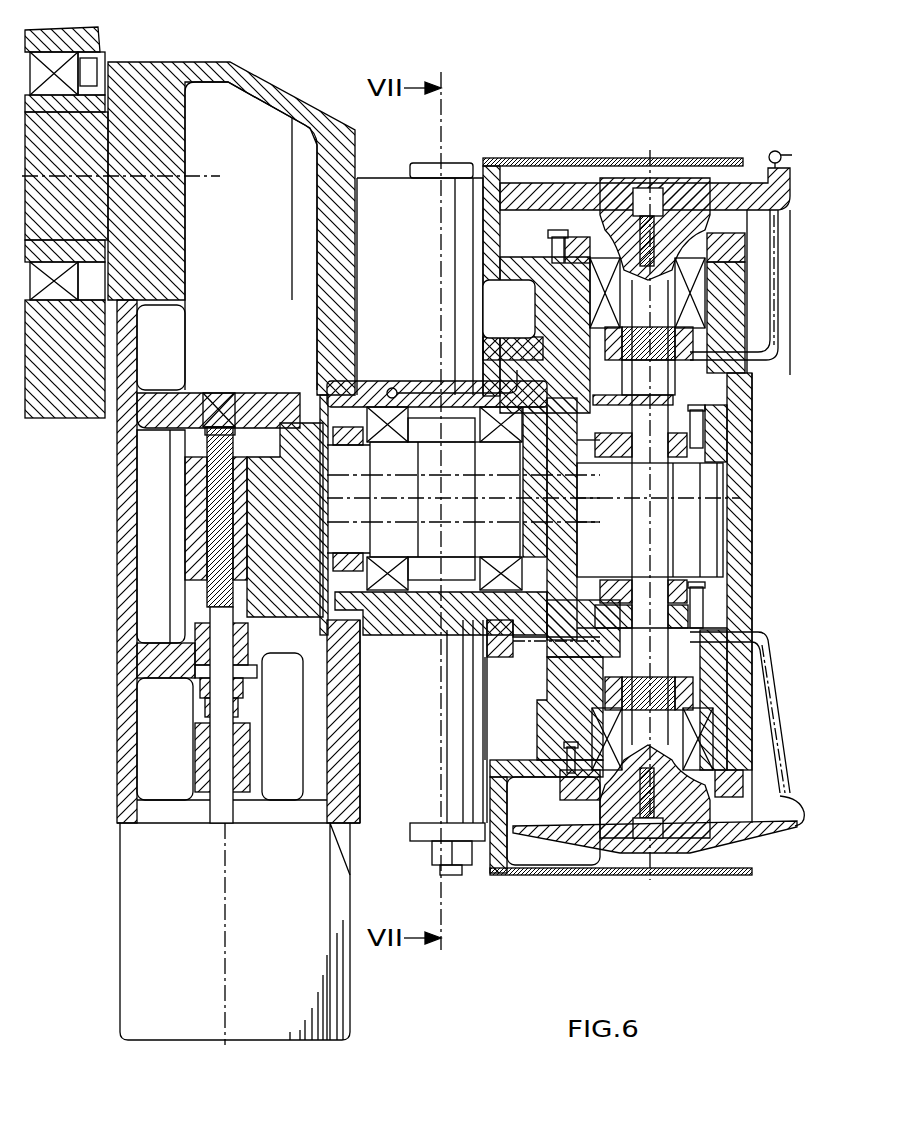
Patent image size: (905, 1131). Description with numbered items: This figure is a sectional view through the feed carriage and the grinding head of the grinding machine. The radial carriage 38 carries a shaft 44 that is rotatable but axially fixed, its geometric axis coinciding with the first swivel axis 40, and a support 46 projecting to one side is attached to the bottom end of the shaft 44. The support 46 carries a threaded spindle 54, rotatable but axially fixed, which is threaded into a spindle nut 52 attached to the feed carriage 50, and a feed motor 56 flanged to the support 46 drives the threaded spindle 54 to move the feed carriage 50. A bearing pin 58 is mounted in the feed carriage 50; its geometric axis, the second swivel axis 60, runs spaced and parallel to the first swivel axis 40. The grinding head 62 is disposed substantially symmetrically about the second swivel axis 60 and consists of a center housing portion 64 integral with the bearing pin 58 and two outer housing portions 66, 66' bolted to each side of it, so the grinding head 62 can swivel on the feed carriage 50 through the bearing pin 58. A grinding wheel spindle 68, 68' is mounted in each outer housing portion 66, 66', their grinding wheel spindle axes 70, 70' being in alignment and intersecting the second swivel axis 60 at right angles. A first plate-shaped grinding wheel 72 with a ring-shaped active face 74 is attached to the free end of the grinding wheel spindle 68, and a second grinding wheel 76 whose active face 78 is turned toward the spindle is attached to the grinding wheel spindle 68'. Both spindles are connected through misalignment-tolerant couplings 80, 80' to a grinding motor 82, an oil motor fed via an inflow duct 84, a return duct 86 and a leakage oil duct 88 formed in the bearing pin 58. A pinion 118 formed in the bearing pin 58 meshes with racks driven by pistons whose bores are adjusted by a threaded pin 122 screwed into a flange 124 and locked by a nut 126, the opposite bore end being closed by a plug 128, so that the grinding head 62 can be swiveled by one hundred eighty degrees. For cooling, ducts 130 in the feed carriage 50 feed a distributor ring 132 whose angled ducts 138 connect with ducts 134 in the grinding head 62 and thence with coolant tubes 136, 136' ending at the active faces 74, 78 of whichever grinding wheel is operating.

The radial carriage 38 is at (72, 408).
The first swivel axis 40 is at (206, 178).
The shaft 44 is at (88, 135).
The support 46 is at (272, 98).
The feed carriage 50 is at (392, 200).
The spindle nut 52 is at (205, 550).
The threaded spindle 54 is at (208, 610).
The feed motor 56 is at (280, 1040).
The bearing pin 58 is at (433, 450).
The second swivel axis 60 is at (748, 485).
The grinding head 62 is at (512, 158).
The center housing portion 64 is at (730, 530).
The outer housing portion 66 is at (536, 264).
The outer housing portion 66' is at (512, 850).
The grinding wheel spindle 68 is at (694, 366).
The grinding wheel spindle 68' is at (599, 691).
The grinding wheel spindle axis 70 is at (655, 492).
The grinding wheel spindle axis 70' is at (655, 838).
The first grinding wheel 72 is at (718, 183).
The active face 74 is at (770, 168).
The second grinding wheel 76 is at (728, 875).
The active face 78 is at (775, 826).
The coupling 80 is at (742, 426).
The coupling 80' is at (745, 605).
The grinding motor 82 is at (710, 560).
The inflow duct 84 is at (577, 525).
The return duct 86 is at (577, 497).
The leakage oil duct 88 is at (577, 472).
The pinion 118 is at (428, 555).
The threaded pin 122 is at (455, 870).
The flange 124 is at (412, 832).
The nut 126 is at (437, 855).
The plug 128 is at (455, 165).
The ducts 130 is at (437, 388).
The distributor ring 132 is at (505, 338).
The ducts 134 is at (545, 300).
The coolant tube 136 is at (781, 126).
The coolant tube 136' is at (748, 748).
The angled ducts 138 is at (508, 350).